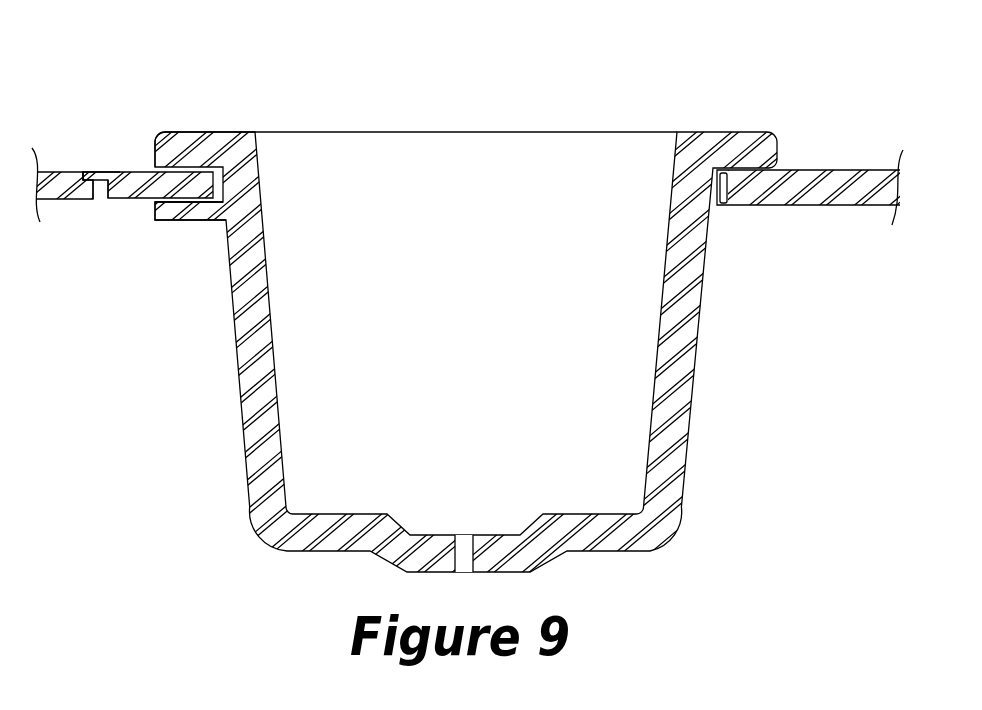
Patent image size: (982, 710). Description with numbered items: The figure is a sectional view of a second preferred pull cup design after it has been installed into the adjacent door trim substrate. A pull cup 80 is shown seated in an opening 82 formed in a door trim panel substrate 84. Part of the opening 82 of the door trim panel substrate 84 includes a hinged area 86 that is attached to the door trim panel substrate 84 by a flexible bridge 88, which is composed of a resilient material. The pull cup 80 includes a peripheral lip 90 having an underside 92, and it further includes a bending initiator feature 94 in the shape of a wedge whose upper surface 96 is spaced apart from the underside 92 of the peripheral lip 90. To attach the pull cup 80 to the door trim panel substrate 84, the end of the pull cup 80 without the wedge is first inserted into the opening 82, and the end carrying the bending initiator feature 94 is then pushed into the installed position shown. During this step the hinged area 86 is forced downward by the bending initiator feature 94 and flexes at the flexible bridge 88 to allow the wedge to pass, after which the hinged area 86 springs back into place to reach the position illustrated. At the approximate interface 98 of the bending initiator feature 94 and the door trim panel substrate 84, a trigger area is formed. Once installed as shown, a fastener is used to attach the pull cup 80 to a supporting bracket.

The pull cup 80 is at (268, 250).
The opening 82 is at (718, 202).
The door trim panel substrate 84 is at (850, 168).
The hinged area 86 is at (132, 172).
The flexible bridge 88 is at (117, 170).
The peripheral lip 90 is at (202, 132).
The underside 92 is at (157, 168).
The bending initiator feature 94 is at (217, 257).
The upper surface 96 is at (152, 203).
The interface 98 is at (172, 185).